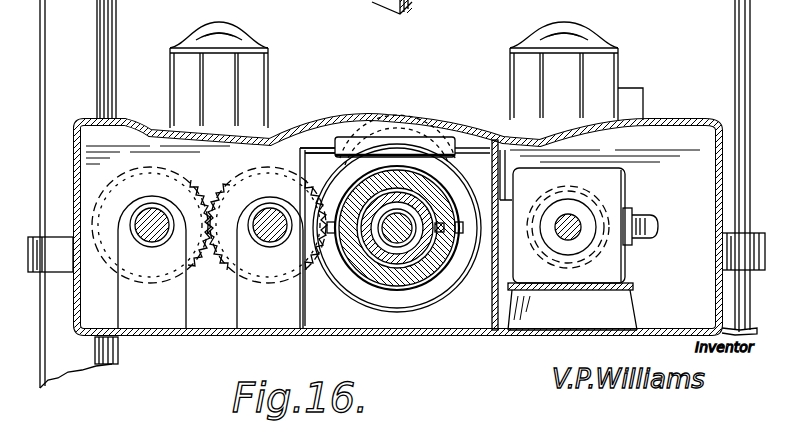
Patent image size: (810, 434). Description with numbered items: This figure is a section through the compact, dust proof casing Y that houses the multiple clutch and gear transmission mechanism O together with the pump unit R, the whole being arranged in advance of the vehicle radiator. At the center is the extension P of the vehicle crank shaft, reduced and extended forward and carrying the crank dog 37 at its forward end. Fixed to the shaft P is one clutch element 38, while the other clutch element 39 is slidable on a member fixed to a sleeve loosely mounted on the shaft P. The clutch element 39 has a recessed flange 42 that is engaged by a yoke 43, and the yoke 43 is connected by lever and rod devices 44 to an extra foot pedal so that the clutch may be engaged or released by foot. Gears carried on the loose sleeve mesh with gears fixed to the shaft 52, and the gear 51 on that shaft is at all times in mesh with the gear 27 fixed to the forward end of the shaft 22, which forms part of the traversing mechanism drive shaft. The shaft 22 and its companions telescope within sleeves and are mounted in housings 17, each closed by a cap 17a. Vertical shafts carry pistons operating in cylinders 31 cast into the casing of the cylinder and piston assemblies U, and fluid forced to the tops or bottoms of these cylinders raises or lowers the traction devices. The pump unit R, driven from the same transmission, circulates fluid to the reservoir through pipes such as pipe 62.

The cap 17a is at (270, 40).
The housing 17 is at (270, 73).
The crank dog 37 is at (400, 15).
The yoke 43 is at (410, 150).
The lever and rod devices 44 is at (492, 140).
The cylinder 31 is at (40, 213).
The gear 27 is at (170, 175).
The gear 51 is at (236, 182).
The shaft 22 is at (155, 240).
The shaft 52 is at (276, 242).
The pipe 62 is at (652, 240).
The clutch element 38 is at (468, 290).
The clutch element 39 is at (387, 303).
The recessed flange 42 is at (427, 283).
The multiple clutch and gear transmission mechanism O is at (125, 28).
The casing Y is at (355, 116).
The cylinder and piston assemblies U is at (666, 46).
The extension of crank shaft P is at (387, 237).
The pump unit R is at (622, 192).